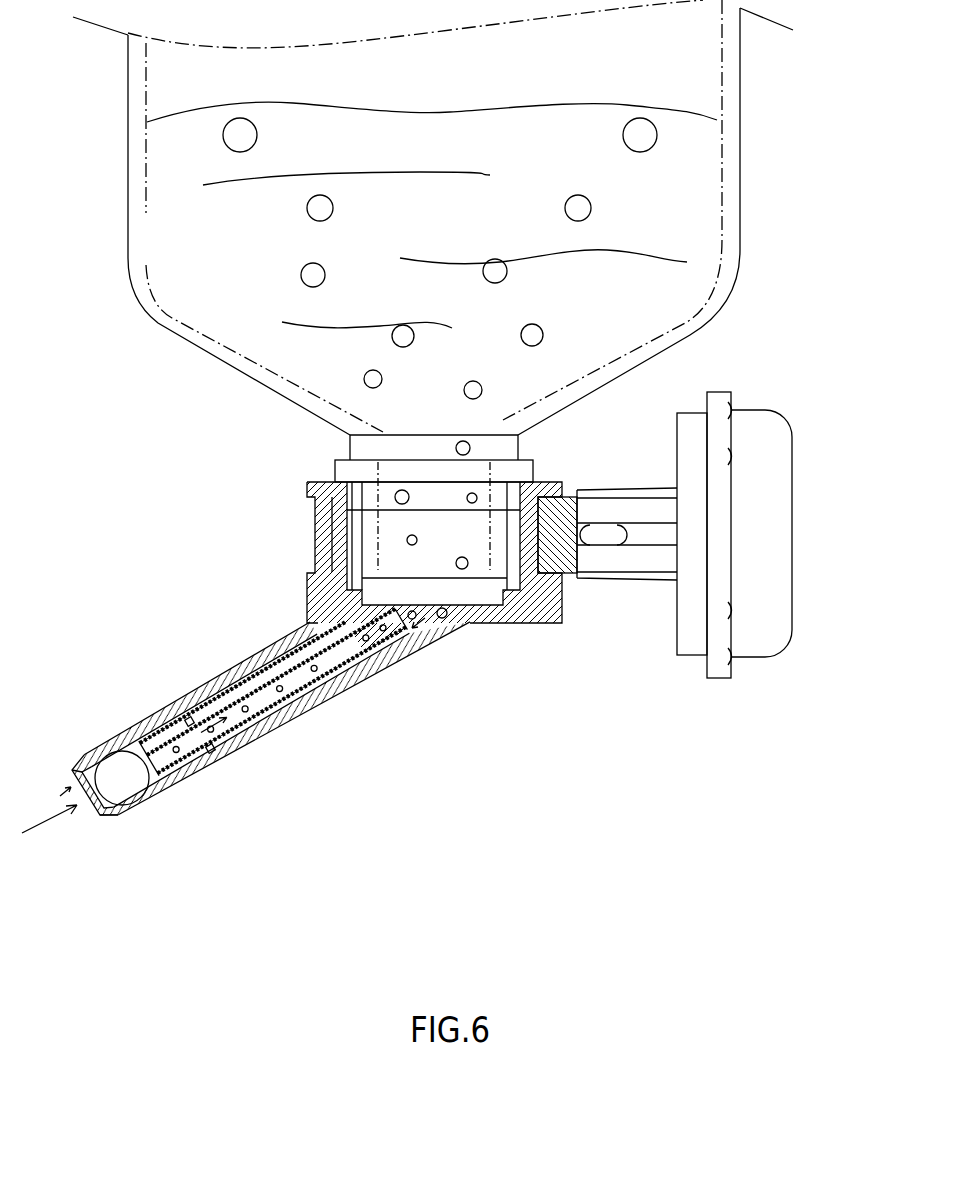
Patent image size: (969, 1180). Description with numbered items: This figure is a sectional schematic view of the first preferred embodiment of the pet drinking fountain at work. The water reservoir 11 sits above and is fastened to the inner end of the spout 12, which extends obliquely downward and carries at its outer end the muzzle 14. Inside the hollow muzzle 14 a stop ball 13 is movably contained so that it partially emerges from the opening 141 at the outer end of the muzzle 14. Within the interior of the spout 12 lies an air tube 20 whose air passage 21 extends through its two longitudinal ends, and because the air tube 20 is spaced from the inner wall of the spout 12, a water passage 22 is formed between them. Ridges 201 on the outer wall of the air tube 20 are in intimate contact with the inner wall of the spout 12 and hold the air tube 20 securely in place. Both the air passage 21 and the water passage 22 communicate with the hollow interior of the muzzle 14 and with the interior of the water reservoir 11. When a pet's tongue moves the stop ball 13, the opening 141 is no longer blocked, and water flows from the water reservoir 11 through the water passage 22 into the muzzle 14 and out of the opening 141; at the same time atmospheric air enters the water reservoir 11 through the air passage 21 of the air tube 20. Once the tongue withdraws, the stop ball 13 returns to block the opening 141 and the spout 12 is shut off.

The water reservoir 11 is at (730, 175).
The spout 12 is at (378, 668).
The stop ball 13 is at (75, 768).
The muzzle 14 is at (140, 805).
The opening 141 is at (90, 810).
The air tube 20 is at (262, 737).
The ridges 201 is at (205, 692).
The air passage 21 is at (262, 672).
The water passage 22 is at (328, 688).